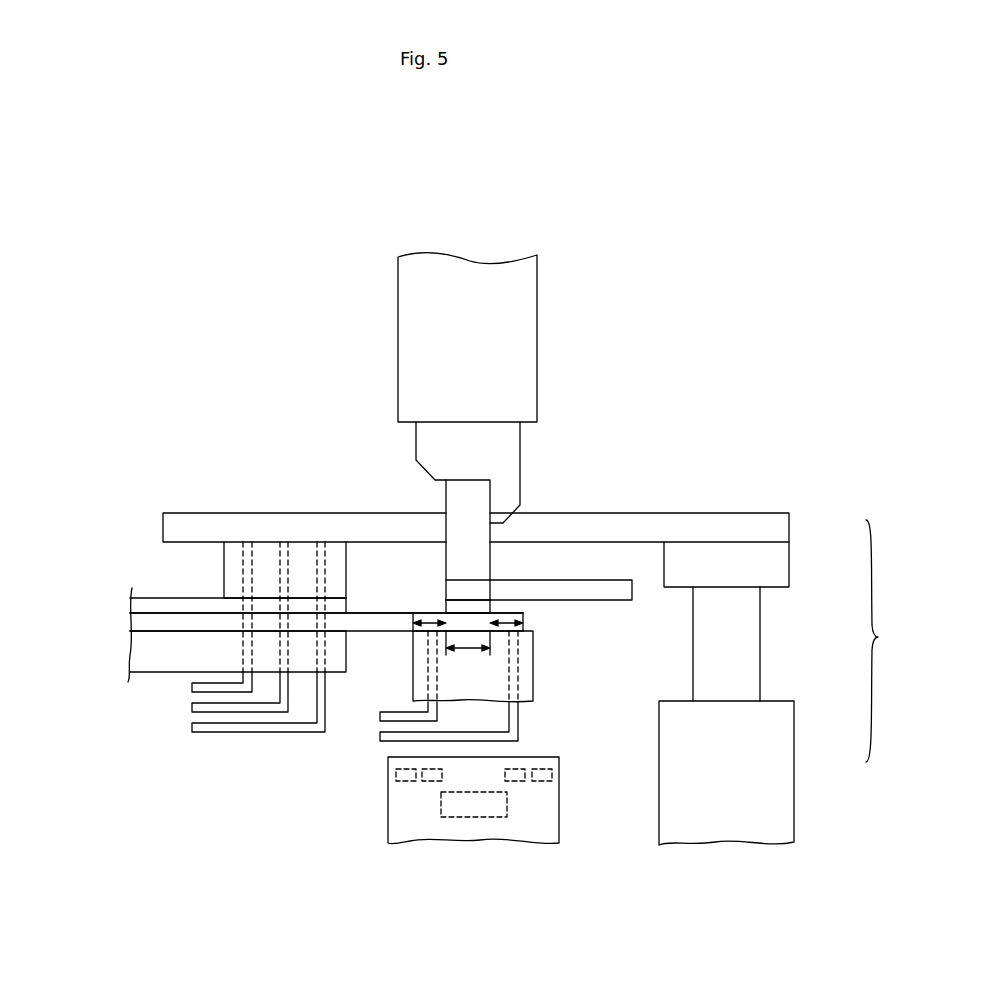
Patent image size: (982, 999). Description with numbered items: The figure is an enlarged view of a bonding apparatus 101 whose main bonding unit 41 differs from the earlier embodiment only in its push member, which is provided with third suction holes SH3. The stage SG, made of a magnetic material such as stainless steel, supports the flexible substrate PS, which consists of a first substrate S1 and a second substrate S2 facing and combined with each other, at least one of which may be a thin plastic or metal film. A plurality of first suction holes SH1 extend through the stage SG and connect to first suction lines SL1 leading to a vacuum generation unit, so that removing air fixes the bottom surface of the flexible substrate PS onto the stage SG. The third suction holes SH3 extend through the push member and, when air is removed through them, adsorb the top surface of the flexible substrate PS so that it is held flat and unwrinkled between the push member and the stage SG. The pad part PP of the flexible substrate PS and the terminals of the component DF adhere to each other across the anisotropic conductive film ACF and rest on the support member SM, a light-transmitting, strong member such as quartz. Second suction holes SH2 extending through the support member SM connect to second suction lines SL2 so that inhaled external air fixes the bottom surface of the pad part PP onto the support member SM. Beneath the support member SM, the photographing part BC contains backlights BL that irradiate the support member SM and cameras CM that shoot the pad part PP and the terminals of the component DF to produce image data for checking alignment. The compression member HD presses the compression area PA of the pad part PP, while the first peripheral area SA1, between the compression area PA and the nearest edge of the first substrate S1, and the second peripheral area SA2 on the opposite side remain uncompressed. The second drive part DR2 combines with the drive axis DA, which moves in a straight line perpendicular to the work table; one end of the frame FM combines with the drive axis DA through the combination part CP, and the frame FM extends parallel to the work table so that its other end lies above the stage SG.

The bonding apparatus 101 is at (692, 290).
The compression member HD is at (492, 563).
The pad part PP is at (470, 612).
The frame FM is at (778, 531).
The combination part CP is at (778, 562).
The drive axis DA is at (748, 655).
The second drive part DR2 is at (783, 752).
The main bonding unit 41 is at (884, 641).
The component DF is at (619, 601).
The anisotropic conductive film ACF is at (452, 606).
The flexible substrate PS is at (66, 588).
The second substrate S2 is at (130, 601).
The first substrate S1 is at (130, 626).
The stage SG is at (130, 656).
The third suction holes SH3 is at (243, 557).
The first suction holes SH1 is at (252, 653).
The second suction holes SH2 is at (428, 683).
The first suction lines SL1 is at (192, 688).
The second suction lines SL2 is at (380, 716).
The first peripheral area SA1 is at (428, 634).
The second peripheral area SA2 is at (510, 612).
The compression area PA is at (468, 651).
The support member SM is at (535, 685).
The photographing part BC is at (318, 768).
The backlights BL is at (392, 775).
The cameras CM is at (441, 803).